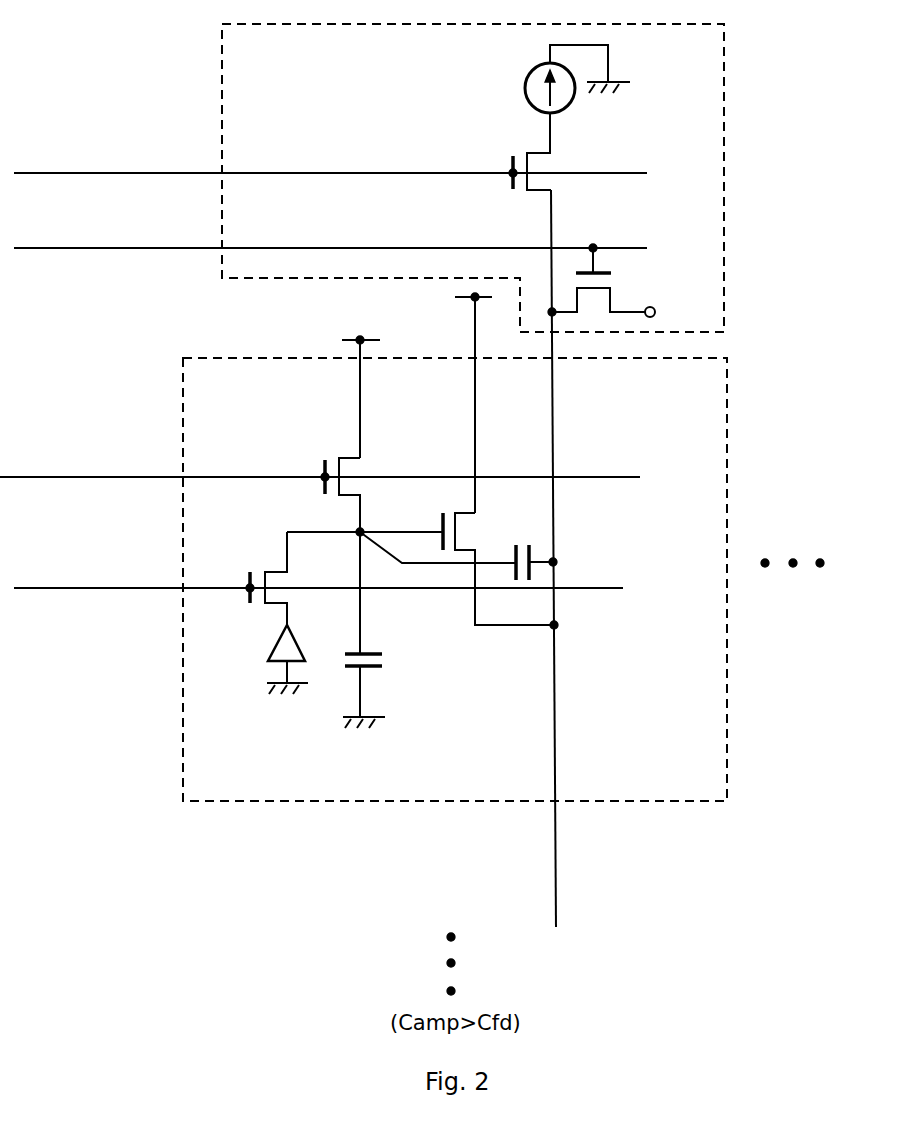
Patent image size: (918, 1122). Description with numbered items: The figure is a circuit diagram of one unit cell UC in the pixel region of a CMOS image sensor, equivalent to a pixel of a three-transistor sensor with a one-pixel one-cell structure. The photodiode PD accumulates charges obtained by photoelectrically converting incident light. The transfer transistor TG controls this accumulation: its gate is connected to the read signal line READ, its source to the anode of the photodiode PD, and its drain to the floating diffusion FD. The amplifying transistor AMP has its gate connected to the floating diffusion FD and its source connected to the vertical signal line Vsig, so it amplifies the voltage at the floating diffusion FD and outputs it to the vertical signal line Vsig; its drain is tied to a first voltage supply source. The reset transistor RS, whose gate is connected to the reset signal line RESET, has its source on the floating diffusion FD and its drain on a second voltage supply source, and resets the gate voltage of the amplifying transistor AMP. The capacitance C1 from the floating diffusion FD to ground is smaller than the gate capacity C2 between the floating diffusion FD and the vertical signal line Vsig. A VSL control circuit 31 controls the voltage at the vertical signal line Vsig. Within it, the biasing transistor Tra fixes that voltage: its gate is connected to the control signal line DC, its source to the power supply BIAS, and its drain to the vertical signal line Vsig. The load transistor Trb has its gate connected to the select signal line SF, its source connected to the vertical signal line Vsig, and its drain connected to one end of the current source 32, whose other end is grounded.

The VSL control circuit 31 is at (725, 262).
The current source 32 is at (524, 88).
The load transistor Trb is at (553, 158).
The biasing transistor Tra is at (620, 291).
The power supply BIAS is at (677, 311).
The select signal line SF is at (330, 158).
The control signal line DC is at (330, 232).
The reset signal line RESET is at (320, 463).
The read signal line READ is at (318, 573).
The reset transistor RS is at (364, 470).
The floating diffusion FD is at (358, 536).
The amplifying transistor AMP is at (474, 531).
The capacitance to ground of the floating diffusion C1 is at (386, 660).
The gate capacity C2 is at (535, 553).
The transfer transistor TG is at (287, 599).
The photodiode PD is at (273, 640).
The unit cell UC is at (275, 803).
The vertical signal line Vsig is at (556, 886).